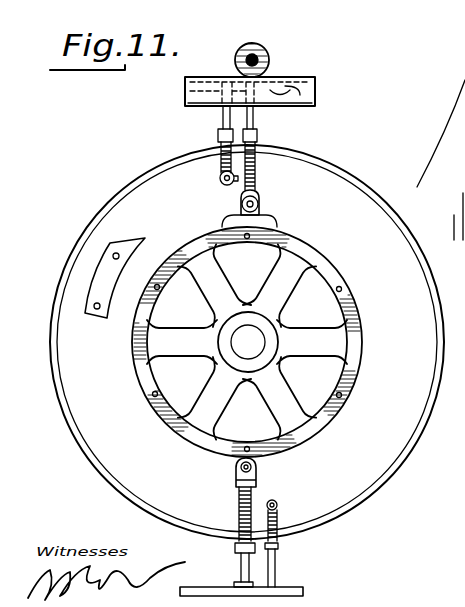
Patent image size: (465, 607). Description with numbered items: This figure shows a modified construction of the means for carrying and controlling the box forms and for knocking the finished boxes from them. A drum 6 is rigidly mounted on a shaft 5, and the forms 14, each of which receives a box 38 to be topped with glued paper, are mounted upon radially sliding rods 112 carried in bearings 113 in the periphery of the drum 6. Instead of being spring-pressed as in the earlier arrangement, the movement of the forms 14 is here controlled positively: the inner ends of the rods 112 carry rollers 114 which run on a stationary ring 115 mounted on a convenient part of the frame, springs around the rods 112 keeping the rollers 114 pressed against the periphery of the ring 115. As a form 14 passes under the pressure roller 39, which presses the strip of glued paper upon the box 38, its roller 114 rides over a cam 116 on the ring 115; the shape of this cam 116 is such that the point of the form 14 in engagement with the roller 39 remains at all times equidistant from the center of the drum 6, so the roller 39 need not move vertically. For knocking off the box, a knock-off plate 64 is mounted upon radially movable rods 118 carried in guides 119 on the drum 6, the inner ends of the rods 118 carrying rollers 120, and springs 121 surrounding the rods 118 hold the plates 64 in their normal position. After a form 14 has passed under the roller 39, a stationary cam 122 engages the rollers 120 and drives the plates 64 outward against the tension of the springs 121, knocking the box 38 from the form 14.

The shaft 5 is at (252, 340).
The drum 6 is at (432, 279).
The box form 14 is at (316, 89).
The box 38 is at (316, 99).
The pressure roller 39 is at (268, 55).
The knock-off plate 64 is at (292, 88).
The radially sliding rod 112 is at (254, 118).
The bearing 113 is at (258, 137).
The roller 114 is at (259, 200).
The stationary ring 115 is at (335, 272).
The cam 116 is at (262, 222).
The radially movable rod 118 is at (222, 118).
The guide 119 is at (218, 135).
The roller 120 is at (222, 170).
The spring 121 is at (228, 185).
The stationary cam 122 is at (134, 242).